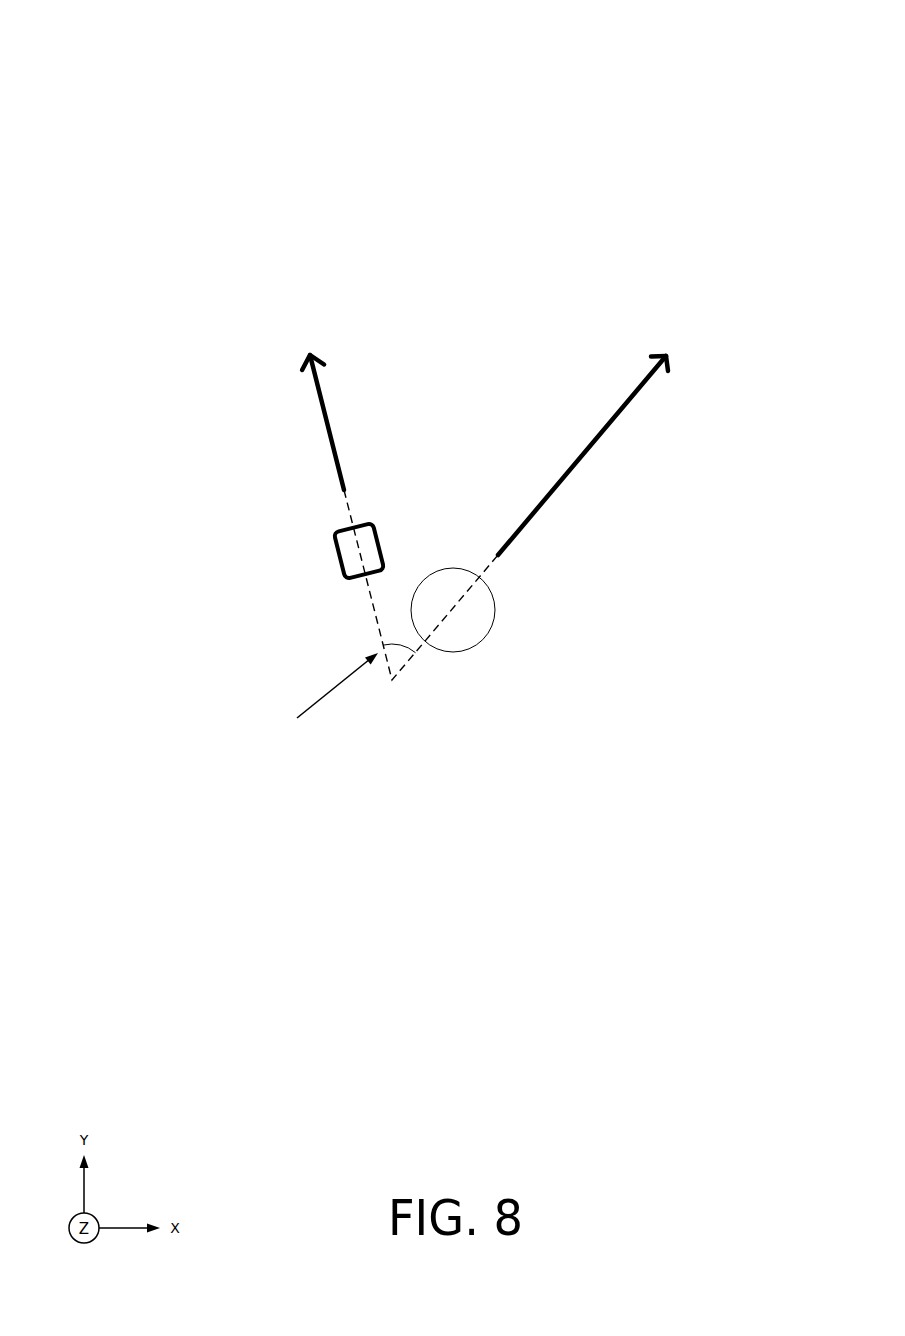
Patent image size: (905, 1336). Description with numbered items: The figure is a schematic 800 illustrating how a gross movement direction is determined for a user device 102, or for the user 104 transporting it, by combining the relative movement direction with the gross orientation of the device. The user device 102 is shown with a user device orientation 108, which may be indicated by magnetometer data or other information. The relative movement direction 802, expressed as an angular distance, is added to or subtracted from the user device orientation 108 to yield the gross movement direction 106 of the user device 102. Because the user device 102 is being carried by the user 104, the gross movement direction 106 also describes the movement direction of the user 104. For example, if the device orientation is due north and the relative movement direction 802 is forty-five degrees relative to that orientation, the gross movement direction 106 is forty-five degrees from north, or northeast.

The schematic 800 is at (704, 66).
The user device orientation 108 is at (318, 402).
The user device 102 is at (339, 556).
The gross movement direction 106 is at (555, 492).
The user 104 is at (495, 610).
The relative movement direction 802 is at (297, 718).